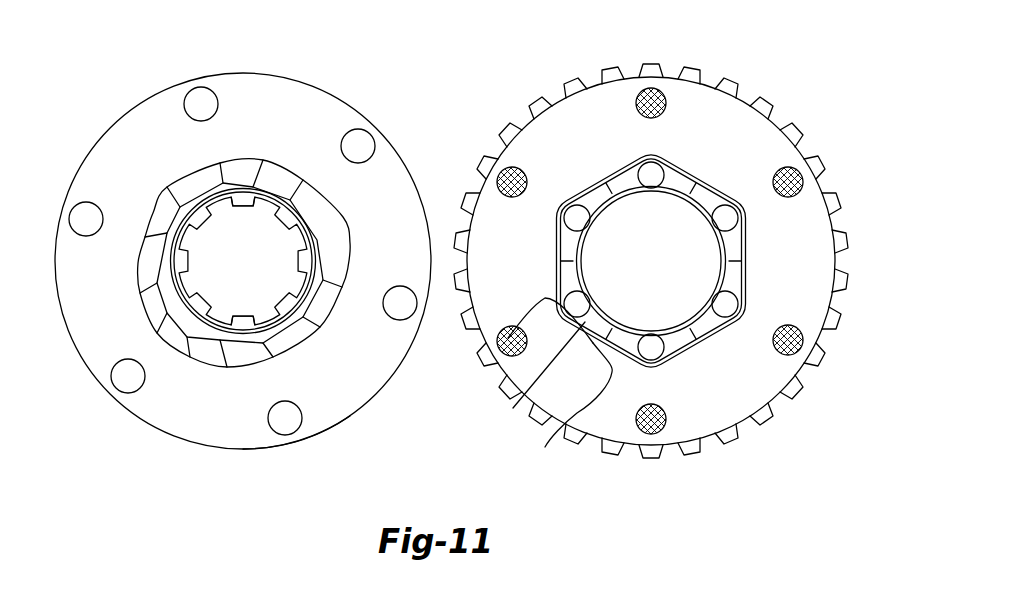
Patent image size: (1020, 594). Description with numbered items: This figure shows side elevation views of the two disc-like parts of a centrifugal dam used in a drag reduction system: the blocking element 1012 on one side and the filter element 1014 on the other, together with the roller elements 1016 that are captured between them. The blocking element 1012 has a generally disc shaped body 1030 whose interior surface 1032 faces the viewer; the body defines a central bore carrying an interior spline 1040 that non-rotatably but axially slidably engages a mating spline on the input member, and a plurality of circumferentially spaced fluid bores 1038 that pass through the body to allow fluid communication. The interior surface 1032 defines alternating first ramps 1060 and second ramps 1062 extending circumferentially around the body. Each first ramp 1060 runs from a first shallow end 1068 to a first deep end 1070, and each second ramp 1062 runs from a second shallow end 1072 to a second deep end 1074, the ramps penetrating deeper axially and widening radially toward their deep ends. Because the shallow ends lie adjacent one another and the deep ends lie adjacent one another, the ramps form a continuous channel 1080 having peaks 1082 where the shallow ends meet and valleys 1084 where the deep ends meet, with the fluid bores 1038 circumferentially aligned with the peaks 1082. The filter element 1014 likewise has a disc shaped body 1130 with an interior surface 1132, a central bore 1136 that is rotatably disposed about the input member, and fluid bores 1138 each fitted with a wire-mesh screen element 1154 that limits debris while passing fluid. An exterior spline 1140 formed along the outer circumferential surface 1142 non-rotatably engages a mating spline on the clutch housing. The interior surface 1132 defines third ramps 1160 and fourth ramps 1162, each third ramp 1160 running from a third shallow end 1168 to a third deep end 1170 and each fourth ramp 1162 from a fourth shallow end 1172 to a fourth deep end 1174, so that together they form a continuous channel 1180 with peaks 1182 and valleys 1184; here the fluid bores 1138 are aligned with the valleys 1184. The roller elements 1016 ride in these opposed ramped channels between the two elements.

The blocking element 1012 is at (300, 110).
The disc shaped body 1030 is at (270, 72).
The interior surface 1032 is at (336, 391).
The fluid bores 1038 is at (367, 170).
The interior spline 1040 is at (248, 322).
The first ramps 1060 is at (203, 184).
The second ramps 1062 is at (172, 211).
The first shallow end 1068 is at (238, 165).
The first deep end 1070 is at (187, 193).
The second shallow end 1072 is at (157, 215).
The second deep end 1074 is at (193, 190).
The continuous channel 1080 is at (157, 265).
The peaks 1082 is at (173, 322).
The valleys 1084 is at (162, 293).
The filter element 1014 is at (620, 92).
The disc shaped body 1130 is at (663, 72).
The interior surface 1132 is at (723, 406).
The central bore 1136 is at (712, 285).
The fluid bores 1138 is at (780, 180).
The exterior spline 1140 is at (744, 95).
The outer circumferential surface 1142 is at (746, 97).
The screen element 1154 is at (800, 180).
The roller elements 1016 is at (647, 177).
The third ramps 1160 is at (595, 193).
The fourth ramps 1162 is at (564, 246).
The third shallow end 1168 is at (610, 187).
The third deep end 1170 is at (563, 215).
The fourth shallow end 1172 is at (557, 267).
The fourth deep end 1174 is at (555, 213).
The continuous channel 1180 is at (513, 408).
The peaks 1182 is at (545, 447).
The valleys 1184 is at (508, 338).